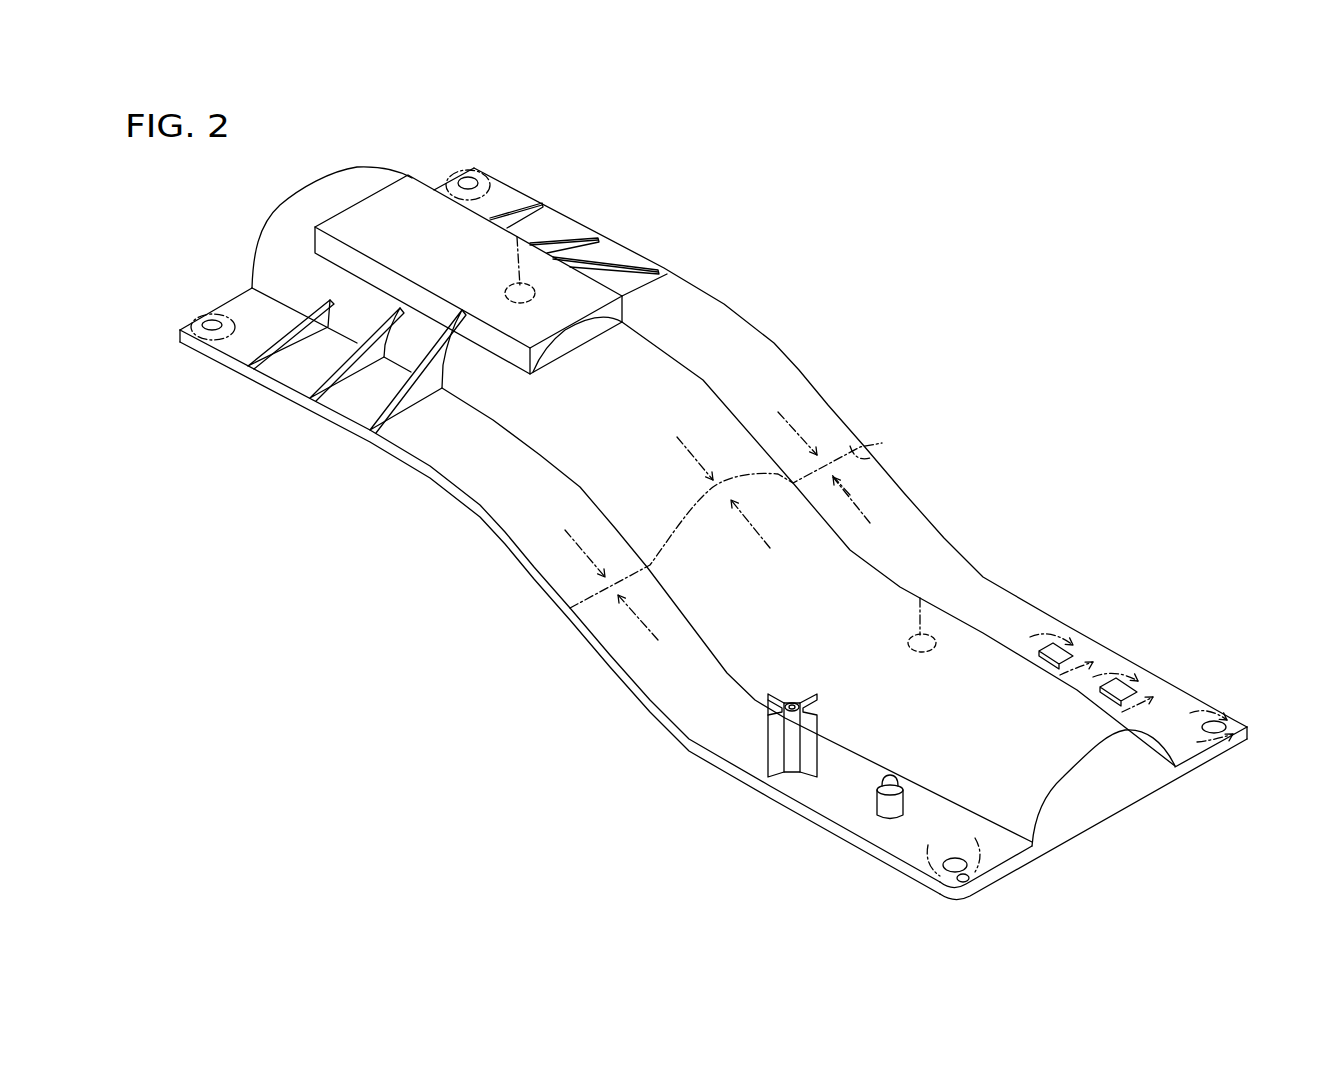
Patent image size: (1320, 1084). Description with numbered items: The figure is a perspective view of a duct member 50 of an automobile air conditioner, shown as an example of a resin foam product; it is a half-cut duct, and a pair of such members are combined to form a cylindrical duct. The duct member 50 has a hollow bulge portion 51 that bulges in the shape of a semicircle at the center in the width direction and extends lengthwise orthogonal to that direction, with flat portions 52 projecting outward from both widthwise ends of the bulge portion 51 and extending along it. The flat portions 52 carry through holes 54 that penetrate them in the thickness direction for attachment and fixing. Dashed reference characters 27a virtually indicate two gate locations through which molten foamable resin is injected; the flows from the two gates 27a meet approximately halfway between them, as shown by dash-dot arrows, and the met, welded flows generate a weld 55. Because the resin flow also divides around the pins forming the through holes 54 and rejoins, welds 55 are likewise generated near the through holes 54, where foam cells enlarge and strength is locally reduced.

The duct member 50 is at (985, 271).
The hollow bulge portion 51 is at (665, 356).
The flat portions 52 is at (788, 356).
The through holes 54 is at (468, 190).
The weld 55 is at (470, 172).
The gate 27a is at (530, 300).